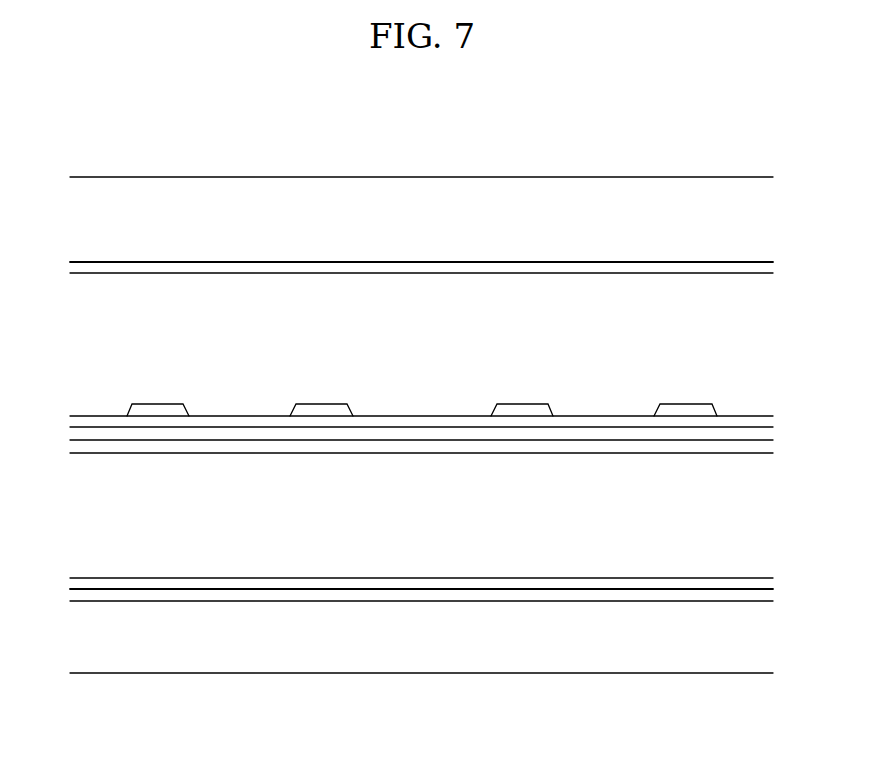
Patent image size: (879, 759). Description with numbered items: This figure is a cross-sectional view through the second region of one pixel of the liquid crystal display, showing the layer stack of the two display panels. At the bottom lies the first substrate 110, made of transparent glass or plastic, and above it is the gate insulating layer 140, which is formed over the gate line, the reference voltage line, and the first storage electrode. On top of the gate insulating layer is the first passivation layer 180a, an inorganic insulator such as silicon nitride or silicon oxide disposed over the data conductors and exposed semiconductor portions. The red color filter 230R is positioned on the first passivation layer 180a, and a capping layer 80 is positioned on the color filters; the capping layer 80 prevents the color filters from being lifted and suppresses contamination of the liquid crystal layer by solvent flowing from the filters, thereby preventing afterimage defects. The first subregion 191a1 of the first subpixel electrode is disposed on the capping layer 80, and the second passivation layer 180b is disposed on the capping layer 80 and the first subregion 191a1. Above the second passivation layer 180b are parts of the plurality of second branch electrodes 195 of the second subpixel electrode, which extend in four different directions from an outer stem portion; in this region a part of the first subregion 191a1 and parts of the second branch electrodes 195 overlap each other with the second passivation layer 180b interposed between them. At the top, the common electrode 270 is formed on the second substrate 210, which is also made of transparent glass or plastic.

The second substrate 210 is at (515, 200).
The common electrode 270 is at (305, 265).
The second branch electrodes 195 is at (143, 408).
The second passivation layer 180b is at (424, 425).
The first subregion 191a1 is at (610, 437).
The capping layer 80 is at (233, 448).
The red color filter 230R is at (220, 545).
The first passivation layer 180a is at (452, 582).
The gate insulating layer 140 is at (352, 597).
The first substrate 110 is at (587, 650).